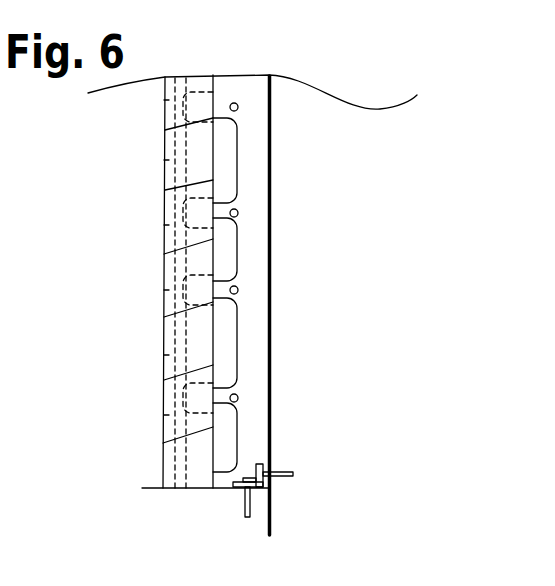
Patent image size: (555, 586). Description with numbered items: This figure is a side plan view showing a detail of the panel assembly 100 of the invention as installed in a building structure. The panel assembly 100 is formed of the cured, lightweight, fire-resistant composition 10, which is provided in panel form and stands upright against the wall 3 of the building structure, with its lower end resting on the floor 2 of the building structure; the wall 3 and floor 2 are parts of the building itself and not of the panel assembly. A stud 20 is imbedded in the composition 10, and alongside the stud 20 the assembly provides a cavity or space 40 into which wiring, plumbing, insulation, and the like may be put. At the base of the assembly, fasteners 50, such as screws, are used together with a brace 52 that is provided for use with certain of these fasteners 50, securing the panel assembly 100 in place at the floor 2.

The panel assembly 100 is at (314, 76).
The lightweight, fire-resistant composition 10 is at (213, 345).
The cavity or space 40 is at (226, 148).
The stud 20 is at (248, 232).
The wall of building structure 3 is at (268, 325).
The floor of building structure 2 is at (155, 487).
The fasteners 50 is at (255, 508).
The brace 52 is at (230, 488).